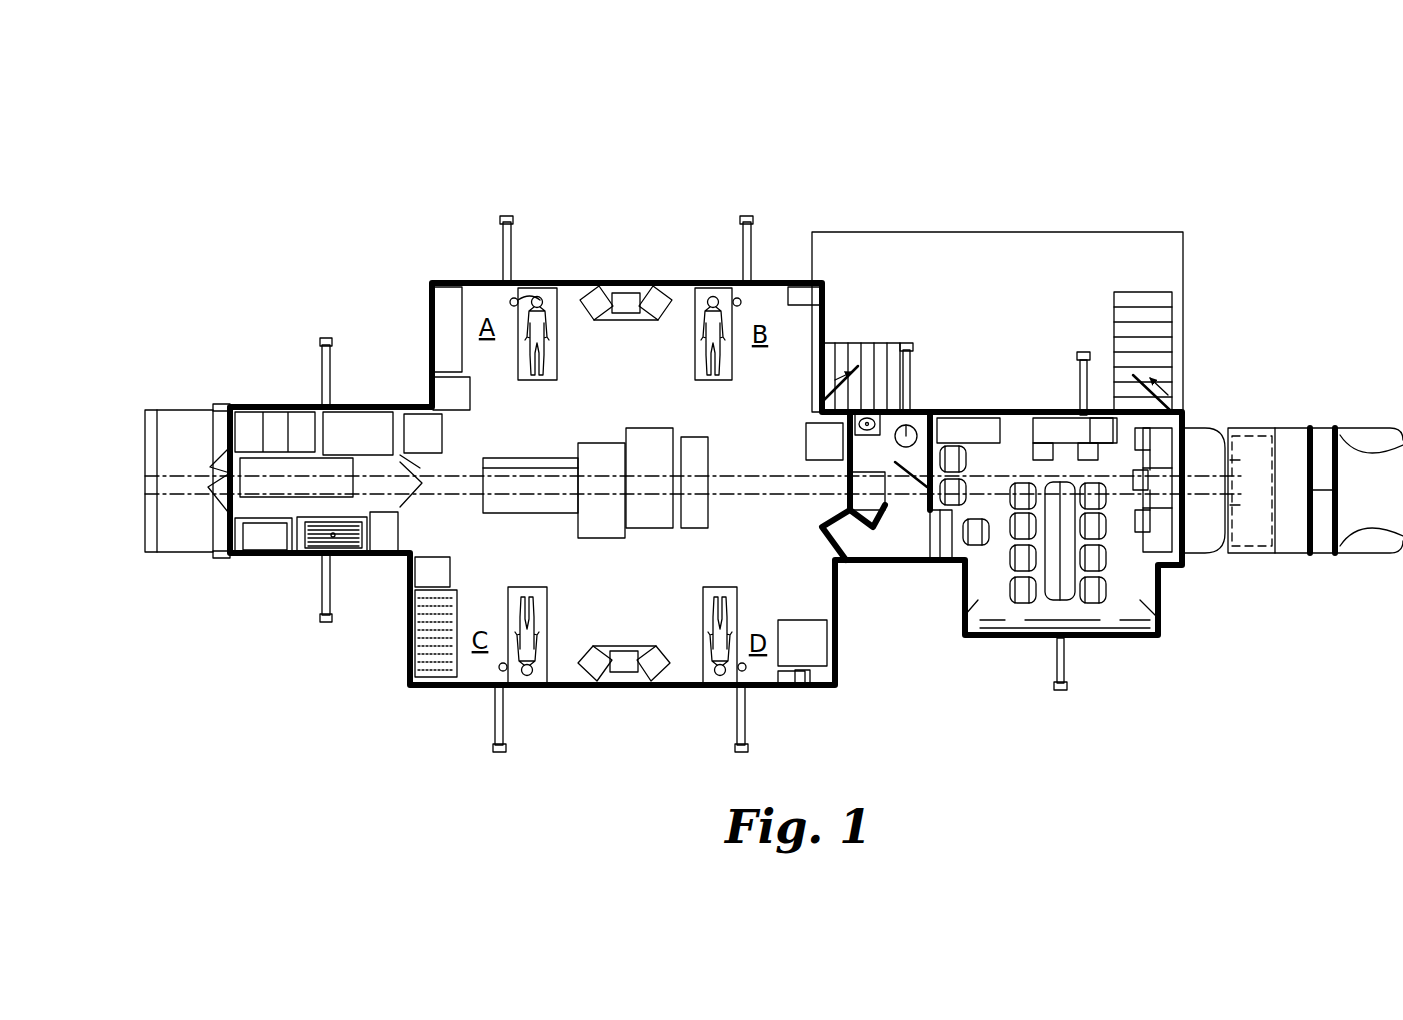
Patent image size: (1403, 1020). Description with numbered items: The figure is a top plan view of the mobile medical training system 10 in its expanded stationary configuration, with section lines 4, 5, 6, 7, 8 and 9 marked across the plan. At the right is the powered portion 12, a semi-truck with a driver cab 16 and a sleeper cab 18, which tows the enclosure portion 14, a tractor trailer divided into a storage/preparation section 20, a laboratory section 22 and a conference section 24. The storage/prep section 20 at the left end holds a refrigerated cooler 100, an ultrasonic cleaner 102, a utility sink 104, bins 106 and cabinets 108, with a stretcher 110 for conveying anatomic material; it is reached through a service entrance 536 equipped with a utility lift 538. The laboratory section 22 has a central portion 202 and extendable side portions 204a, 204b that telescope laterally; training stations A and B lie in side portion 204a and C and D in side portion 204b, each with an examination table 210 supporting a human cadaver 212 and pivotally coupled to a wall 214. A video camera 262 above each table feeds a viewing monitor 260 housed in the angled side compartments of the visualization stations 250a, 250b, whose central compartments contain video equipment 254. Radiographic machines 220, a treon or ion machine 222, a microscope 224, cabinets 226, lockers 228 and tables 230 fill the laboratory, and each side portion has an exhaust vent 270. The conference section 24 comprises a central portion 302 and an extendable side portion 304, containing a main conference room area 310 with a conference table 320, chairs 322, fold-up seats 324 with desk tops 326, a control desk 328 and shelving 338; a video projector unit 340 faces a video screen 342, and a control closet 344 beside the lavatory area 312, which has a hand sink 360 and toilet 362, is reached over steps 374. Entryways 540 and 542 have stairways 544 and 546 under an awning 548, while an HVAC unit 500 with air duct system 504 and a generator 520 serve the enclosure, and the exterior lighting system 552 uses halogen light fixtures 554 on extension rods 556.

The mobile medical training system 10 is at (212, 175).
The powered portion 12 is at (1303, 410).
The enclosure portion 14 is at (530, 145).
The driver cab 16 is at (1340, 555).
The sleeper cab 18 is at (1260, 553).
The storage/preparation section 20 is at (200, 295).
The laboratory section 22 is at (665, 215).
The conference section 24 is at (955, 300).
The refrigerated cooler 100 is at (355, 412).
The ultrasonic cleaner 102 is at (270, 552).
The utility sink 104 is at (312, 552).
The bins 106 is at (255, 412).
The cabinets 108 is at (385, 553).
The stretcher 110 is at (215, 440).
The central portion 202 is at (405, 395).
The extendable side portion 204a is at (438, 278).
The extendable side portion 204b is at (445, 700).
The examination table 210 is at (545, 390).
The human cadaver 212 is at (530, 283).
The wall 214 is at (795, 285).
The radiographic machine 220 is at (603, 443).
The treon or ion machine 222 is at (440, 568).
The microscope 224 is at (820, 645).
The cabinets 226 is at (466, 394).
The lockers 228 is at (432, 690).
The tables 230 is at (405, 340).
The central electronic visualization station 250a is at (630, 280).
The central electronic visualization station 250b is at (615, 690).
The visualization/video equipment 254 is at (626, 313).
The viewing monitor 260 is at (600, 310).
The video camera 262 is at (503, 275).
The exhaust vent 270 is at (800, 305).
The central portion 302 is at (1050, 400).
The extendable side portion 304 is at (1165, 615).
The main conference room area 310 is at (1062, 482).
The lavatory area 312 is at (865, 435).
The conference table 320 is at (1075, 600).
The chairs 322 is at (1025, 575).
The fold-up seats 324 is at (1115, 380).
The desk/table tops 326 is at (1122, 340).
The control desk 328 is at (958, 418).
The shelving 338 is at (975, 640).
The video projector unit 340 is at (1087, 400).
The video screen 342 is at (1025, 645).
The control closet 344 is at (855, 497).
The hand sink 360 is at (865, 390).
The toilet 362 is at (920, 440).
The steps 374 is at (935, 560).
The HVAC unit 500 is at (1205, 420).
The air duct system 504 is at (1175, 575).
The electric generator 520 is at (1283, 460).
The service entrance 536 is at (205, 520).
The utility lift 538 is at (213, 545).
The entryway 540 is at (835, 345).
The entryway 542 is at (1178, 410).
The stairway 544 is at (826, 345).
The stairway 546 is at (1120, 290).
The awning 548 is at (940, 228).
The exterior lighting system 552 is at (268, 300).
The halogen light fixtures 554 is at (325, 338).
The extension rods 556 is at (322, 380).
The section line 4 is at (1223, 600).
The section line 5 is at (1223, 585).
The section line 6 is at (344, 460).
The section line 7 is at (556, 760).
The section line 8 is at (1050, 338).
The section line 9 is at (1000, 720).